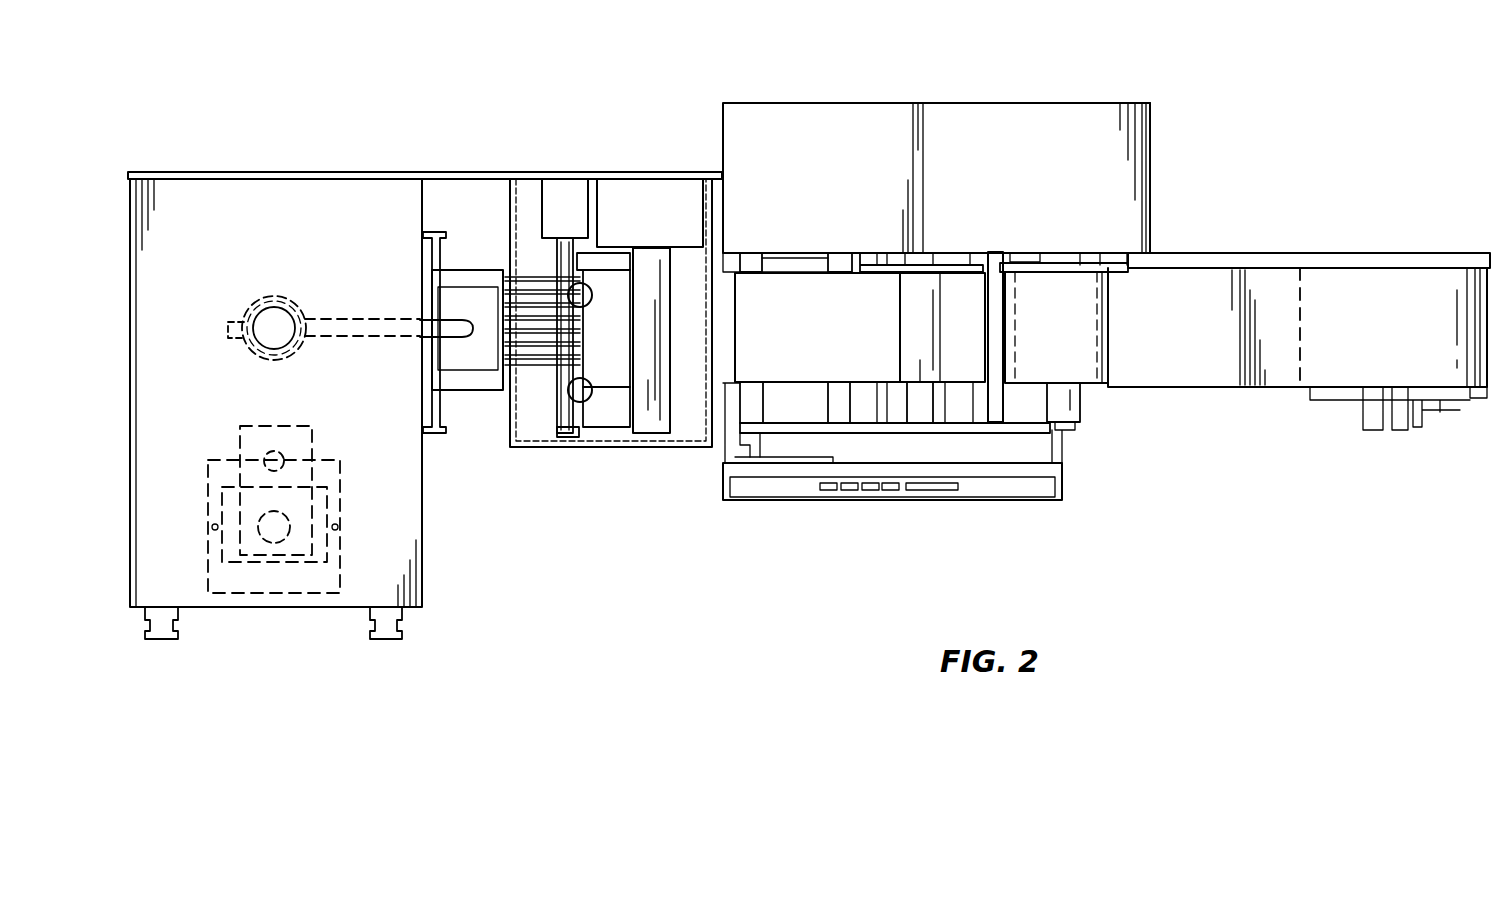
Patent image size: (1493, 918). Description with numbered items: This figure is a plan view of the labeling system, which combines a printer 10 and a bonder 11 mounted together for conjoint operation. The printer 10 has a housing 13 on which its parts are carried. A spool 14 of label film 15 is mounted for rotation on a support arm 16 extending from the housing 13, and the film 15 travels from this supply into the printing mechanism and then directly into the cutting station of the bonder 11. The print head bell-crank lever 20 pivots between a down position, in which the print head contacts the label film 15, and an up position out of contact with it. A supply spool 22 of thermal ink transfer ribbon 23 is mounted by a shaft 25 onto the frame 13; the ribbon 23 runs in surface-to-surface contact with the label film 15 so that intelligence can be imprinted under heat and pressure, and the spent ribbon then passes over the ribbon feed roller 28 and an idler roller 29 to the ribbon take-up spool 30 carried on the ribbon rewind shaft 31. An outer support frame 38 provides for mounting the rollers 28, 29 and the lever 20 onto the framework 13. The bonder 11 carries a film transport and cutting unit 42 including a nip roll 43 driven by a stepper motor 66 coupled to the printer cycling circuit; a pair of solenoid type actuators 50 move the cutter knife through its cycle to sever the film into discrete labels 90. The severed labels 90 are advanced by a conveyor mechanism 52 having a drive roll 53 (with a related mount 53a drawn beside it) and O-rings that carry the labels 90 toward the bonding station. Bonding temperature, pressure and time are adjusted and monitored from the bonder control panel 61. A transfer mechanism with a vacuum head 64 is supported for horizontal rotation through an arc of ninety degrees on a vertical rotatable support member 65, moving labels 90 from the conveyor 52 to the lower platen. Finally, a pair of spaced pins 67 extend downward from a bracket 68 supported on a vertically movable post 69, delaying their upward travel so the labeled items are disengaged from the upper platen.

The printer 10 is at (1020, 95).
The bonder 11 is at (440, 165).
The housing 13 is at (1140, 162).
The spool 14 is at (1400, 262).
The label film 15 is at (1270, 283).
The support arm 16 is at (1222, 258).
The print head bell-crank lever 20 is at (800, 460).
The supply spool 22 is at (1090, 322).
The thermal ink transfer ribbon 23 is at (975, 318).
The shaft 25 is at (1065, 412).
The ribbon feed roller 28 is at (748, 262).
The idler roller 29 is at (840, 262).
The ribbon take-up spool 30 is at (955, 268).
The ribbon rewind shaft 31 is at (915, 318).
The outer support frame 38 is at (808, 425).
The film transport and cutting unit 42 is at (668, 450).
The nip roll 43 is at (660, 372).
The solenoid type actuators 50 is at (590, 388).
The conveyor mechanism 52 is at (535, 370).
The drive roll 53 is at (558, 380).
The rod mount 53a is at (562, 192).
The bonder control panel 61 is at (371, 196).
The vacuum head 64 is at (462, 295).
The vertical rotatable support member 65 is at (290, 298).
The stepper motor 66 is at (650, 192).
The pins 67 is at (212, 527).
The bracket 68 is at (315, 440).
The post 69 is at (275, 453).
The labels 90 is at (455, 376).